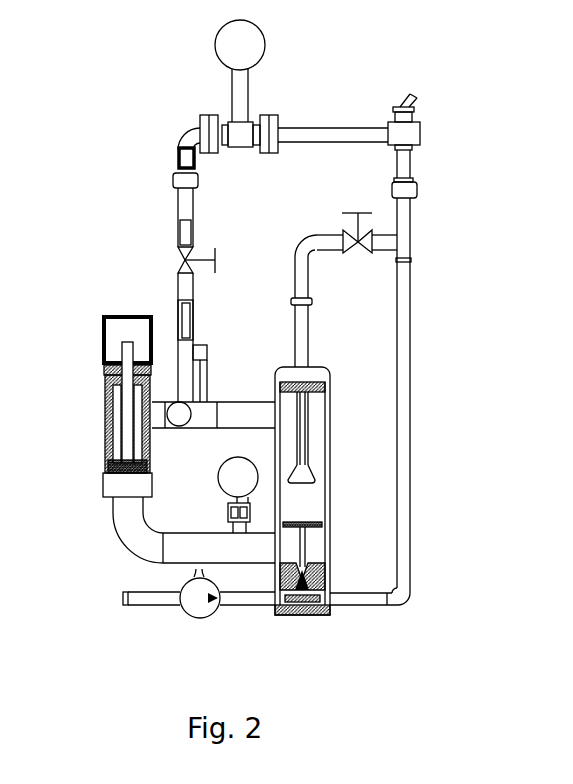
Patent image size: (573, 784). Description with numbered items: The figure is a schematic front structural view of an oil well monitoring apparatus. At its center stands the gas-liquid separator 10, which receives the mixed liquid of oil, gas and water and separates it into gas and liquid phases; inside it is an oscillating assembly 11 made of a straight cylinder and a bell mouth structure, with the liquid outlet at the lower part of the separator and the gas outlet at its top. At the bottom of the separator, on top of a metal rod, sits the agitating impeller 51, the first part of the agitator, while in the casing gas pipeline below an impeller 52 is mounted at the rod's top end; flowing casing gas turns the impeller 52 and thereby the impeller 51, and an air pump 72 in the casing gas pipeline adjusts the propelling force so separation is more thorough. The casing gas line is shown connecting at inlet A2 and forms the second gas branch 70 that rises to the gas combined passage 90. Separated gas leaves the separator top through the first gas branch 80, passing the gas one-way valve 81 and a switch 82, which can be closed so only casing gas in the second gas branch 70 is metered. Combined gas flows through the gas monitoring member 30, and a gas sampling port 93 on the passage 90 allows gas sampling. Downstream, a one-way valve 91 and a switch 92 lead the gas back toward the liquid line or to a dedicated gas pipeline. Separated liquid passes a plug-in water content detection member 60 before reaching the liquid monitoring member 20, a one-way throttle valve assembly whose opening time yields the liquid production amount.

The gas-liquid separator 10 is at (390, 526).
The oscillating assembly 11 is at (391, 437).
The liquid monitoring member 20 is at (93, 415).
The gas monitoring member 30 is at (274, 71).
The agitating impeller 51 is at (389, 524).
The impeller 52 is at (329, 605).
The water content detection member 60 is at (156, 510).
The second gas branch 70 is at (412, 401).
The air pump 72 is at (227, 608).
The first gas branch 80 is at (385, 435).
The gas one-way valve 81 is at (388, 291).
The switch 82 is at (413, 213).
The gas combined passage 90 is at (333, 104).
The one-way valve 91 is at (157, 295).
The switch 92 is at (161, 245).
The gas sampling port 93 is at (420, 86).
The inlet A2 is at (126, 612).